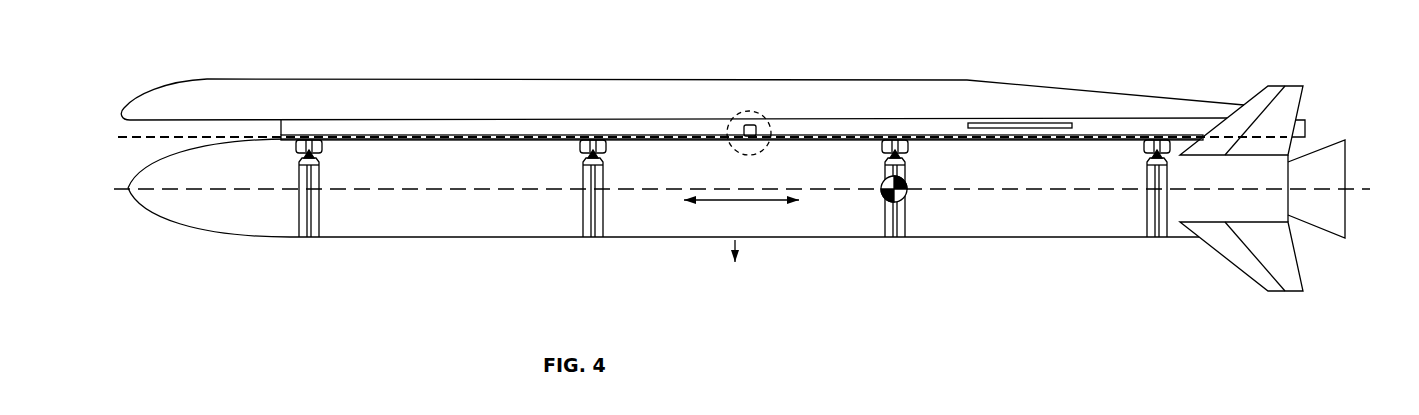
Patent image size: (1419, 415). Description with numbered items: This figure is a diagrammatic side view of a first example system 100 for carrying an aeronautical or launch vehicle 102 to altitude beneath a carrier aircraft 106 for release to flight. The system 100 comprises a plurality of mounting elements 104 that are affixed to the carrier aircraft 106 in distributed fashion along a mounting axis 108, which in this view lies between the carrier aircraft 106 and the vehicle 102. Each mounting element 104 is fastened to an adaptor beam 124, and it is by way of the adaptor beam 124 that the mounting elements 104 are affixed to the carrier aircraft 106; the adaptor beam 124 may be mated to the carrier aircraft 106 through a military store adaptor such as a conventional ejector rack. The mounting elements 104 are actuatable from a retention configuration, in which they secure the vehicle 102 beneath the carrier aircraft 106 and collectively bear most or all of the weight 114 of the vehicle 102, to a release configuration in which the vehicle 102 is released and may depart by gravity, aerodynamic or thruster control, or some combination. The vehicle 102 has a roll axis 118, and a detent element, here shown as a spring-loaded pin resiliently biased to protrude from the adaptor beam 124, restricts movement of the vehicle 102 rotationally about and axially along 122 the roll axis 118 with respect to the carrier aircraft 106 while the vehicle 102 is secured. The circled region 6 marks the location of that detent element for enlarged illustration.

The system for carrying an aeronautical or launch vehicle 100 is at (1165, 51).
The vehicle 102 is at (264, 259).
The mounting elements 104 is at (1143, 247).
The carrier aircraft 106 is at (659, 110).
The mounting axis 108 is at (163, 139).
The weight of the vehicle 114 is at (737, 245).
The roll axis 118 is at (114, 191).
The axial movement along the roll axis 122 is at (738, 203).
The adaptor beam 124 is at (852, 130).
The detail region of FIG. 6 is at (758, 111).